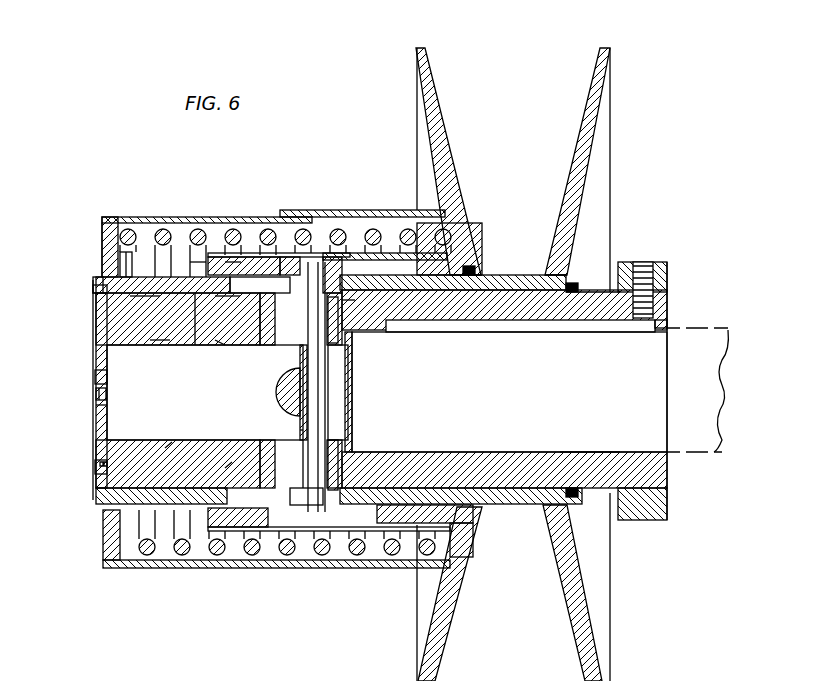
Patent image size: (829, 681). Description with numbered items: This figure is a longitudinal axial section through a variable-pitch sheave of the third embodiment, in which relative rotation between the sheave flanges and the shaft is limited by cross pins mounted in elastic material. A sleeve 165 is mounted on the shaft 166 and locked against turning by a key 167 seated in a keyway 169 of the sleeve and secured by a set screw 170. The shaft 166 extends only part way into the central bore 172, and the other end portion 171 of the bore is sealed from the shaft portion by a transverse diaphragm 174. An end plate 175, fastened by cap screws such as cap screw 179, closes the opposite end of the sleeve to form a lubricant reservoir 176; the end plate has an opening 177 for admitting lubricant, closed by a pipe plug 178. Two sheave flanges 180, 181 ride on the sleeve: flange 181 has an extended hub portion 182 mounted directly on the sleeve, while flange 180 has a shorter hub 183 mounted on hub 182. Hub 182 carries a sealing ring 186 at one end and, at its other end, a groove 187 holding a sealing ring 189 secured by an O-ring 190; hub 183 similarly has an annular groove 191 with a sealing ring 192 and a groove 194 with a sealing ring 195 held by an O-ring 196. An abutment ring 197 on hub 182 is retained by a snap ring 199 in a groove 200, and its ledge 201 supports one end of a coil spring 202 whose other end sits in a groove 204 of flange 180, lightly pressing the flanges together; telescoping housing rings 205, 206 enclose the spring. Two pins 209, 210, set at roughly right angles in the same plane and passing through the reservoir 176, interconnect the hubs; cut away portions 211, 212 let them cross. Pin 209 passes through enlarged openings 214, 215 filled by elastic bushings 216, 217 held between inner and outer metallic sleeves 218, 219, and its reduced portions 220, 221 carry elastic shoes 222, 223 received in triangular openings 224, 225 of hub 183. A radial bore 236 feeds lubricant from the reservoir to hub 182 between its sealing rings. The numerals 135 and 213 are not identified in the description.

The seal 135 is at (122, 262).
The sleeve 165 is at (640, 478).
The shaft 166 is at (705, 345).
The key 167 is at (594, 322).
The keyway 169 is at (662, 322).
The set screw 170 is at (645, 268).
The end portion of central bore 171 is at (96, 425).
The central bore 172 is at (205, 399).
The diaphragm 174 is at (354, 376).
The end plate 175 is at (96, 410).
The lubricant reservoir 176 is at (172, 444).
The opening 177 is at (96, 377).
The pipe plug 178 is at (96, 395).
The cap screw 179 is at (96, 467).
The sheave flange 180 is at (428, 131).
The sheave flange 181 is at (598, 150).
The extended hub portion 182 is at (512, 276).
The hub 183 is at (238, 232).
The sealing ring 186 is at (146, 304).
The groove 187 is at (576, 282).
The sealing ring 189 is at (590, 452).
The O-ring 190 is at (560, 252).
The annular groove 191 is at (465, 525).
The sealing ring 192 is at (478, 264).
The groove 194 is at (210, 566).
The sealing ring 195 is at (232, 460).
The O-ring 196 is at (218, 235).
The abutment ring 197 is at (108, 225).
The snap ring 199 is at (96, 272).
The groove 200 is at (94, 285).
The annular flange or ledge 201 is at (152, 218).
The coil spring 202 is at (287, 256).
The groove 204 is at (470, 222).
The housing ring 205 is at (175, 229).
The housing ring 206 is at (322, 253).
The pin 209 is at (322, 430).
The pin 210 is at (285, 392).
The cut away reduced portion 211 is at (300, 400).
The cut away reduced portion 212 is at (303, 372).
The wall 213 is at (318, 470).
The opening 214 is at (233, 299).
The opening 215 is at (300, 437).
The bushing 216 is at (343, 312).
The bushing 217 is at (352, 446).
The inner metallic sleeve 218 is at (310, 373).
The outer metallic sleeve 219 is at (225, 343).
The reduced portion 220 is at (301, 390).
The reduced portion 221 is at (296, 502).
The shoe 222 is at (380, 203).
The shoe 223 is at (352, 562).
The triangular shaped opening 224 is at (268, 256).
The triangular shaped opening 225 is at (248, 562).
The radial bore 236 is at (158, 331).